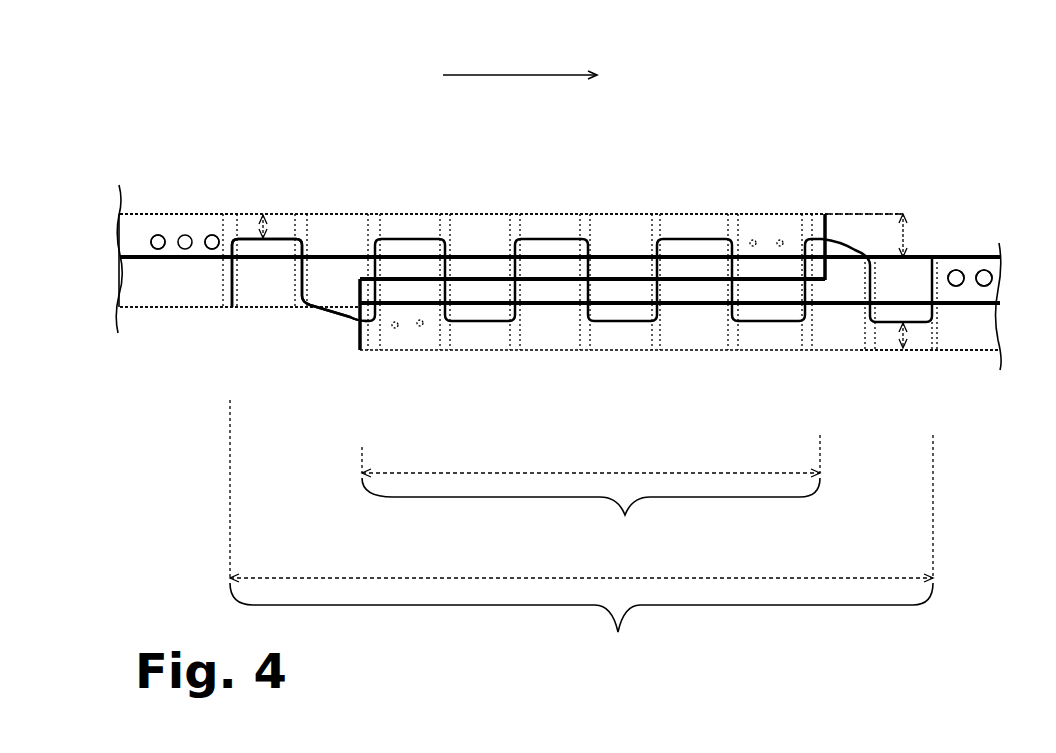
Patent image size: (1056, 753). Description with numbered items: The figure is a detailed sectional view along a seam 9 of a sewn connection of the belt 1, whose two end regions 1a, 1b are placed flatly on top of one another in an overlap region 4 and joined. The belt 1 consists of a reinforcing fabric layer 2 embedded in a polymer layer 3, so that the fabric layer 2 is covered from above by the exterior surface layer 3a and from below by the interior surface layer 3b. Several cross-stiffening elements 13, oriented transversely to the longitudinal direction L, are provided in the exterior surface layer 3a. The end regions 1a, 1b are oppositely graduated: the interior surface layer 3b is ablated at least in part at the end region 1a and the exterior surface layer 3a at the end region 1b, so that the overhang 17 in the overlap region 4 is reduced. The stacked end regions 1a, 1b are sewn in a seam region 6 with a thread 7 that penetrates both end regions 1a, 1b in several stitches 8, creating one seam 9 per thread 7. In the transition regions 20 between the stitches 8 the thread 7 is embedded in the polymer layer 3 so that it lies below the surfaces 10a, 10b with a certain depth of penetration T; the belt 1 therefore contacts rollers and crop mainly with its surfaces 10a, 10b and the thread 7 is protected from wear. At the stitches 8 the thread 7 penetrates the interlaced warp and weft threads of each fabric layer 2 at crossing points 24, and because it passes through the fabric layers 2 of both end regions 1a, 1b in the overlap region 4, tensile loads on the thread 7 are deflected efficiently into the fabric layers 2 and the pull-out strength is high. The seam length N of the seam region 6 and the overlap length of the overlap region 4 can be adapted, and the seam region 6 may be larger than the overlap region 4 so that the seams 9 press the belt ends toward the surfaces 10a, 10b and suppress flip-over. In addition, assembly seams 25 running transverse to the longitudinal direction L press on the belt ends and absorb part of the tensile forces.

The belt 1 is at (750, 192).
The end region 1a is at (810, 212).
The end region 1b is at (415, 353).
The reinforcing fabric layer 2 is at (137, 252).
The polymer layer 3 is at (135, 280).
The exterior surface layer 3a is at (187, 217).
The interior surface layer 3b is at (175, 290).
The overlap region 4 is at (591, 526).
The seam region 6 is at (581, 640).
The thread 7 is at (218, 322).
The stitches 8 is at (233, 307).
The seam 9 is at (872, 388).
The surface 10a is at (158, 212).
The surface 10b is at (817, 352).
The cross-stiffening elements 13 is at (207, 224).
The overhang 17 is at (910, 233).
The transition regions 20 is at (393, 239).
The crossing points 24 is at (640, 250).
The assembly seams 25 is at (395, 325).
The depth of penetration T is at (268, 228).
The longitudinal direction L is at (520, 48).
The seam length N is at (363, 577).